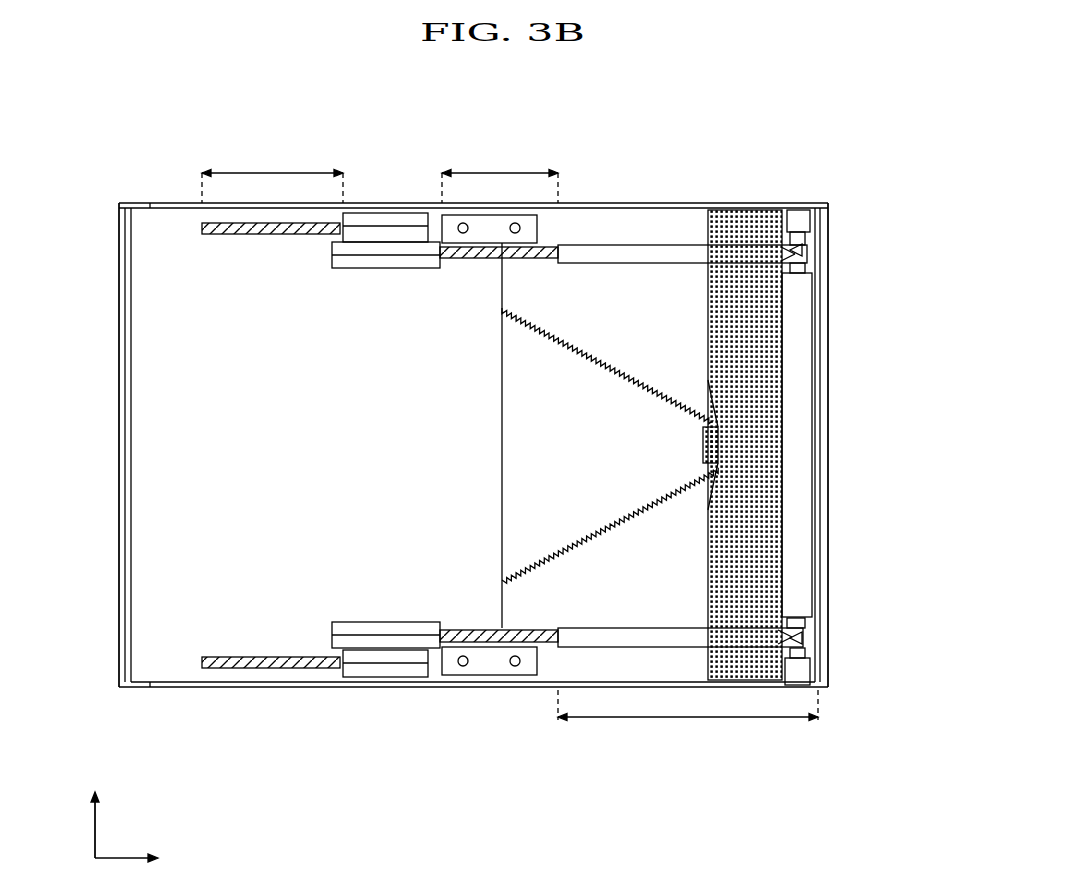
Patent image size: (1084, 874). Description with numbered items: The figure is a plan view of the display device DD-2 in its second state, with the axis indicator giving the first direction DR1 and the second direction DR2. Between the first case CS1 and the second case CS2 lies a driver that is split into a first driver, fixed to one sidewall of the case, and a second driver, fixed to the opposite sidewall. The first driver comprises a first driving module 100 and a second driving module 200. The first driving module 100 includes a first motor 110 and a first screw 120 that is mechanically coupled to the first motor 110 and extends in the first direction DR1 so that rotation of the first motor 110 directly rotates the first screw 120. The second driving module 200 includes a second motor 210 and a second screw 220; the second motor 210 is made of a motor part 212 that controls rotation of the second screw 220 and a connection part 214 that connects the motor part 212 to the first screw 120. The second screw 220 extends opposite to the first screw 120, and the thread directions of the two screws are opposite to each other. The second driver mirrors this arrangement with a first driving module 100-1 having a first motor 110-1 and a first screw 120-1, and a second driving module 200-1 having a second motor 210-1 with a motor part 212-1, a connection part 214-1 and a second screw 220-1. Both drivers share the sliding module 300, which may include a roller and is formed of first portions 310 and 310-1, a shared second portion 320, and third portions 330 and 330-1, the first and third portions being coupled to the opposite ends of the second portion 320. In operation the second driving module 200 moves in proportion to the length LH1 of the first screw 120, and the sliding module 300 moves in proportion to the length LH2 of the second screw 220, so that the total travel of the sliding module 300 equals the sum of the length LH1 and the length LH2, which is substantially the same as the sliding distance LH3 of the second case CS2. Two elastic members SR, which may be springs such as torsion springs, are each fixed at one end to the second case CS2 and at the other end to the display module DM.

The first driving module 100 is at (440, 141).
The first motor 110 is at (445, 228).
The first screw 120 is at (340, 205).
The second driving module 200 is at (495, 361).
The second motor 210 is at (455, 322).
The motor part 212 is at (352, 268).
The connection part 214 is at (400, 268).
The second screw 220 is at (472, 258).
The sliding module 300 is at (902, 238).
The first portion 310 is at (785, 250).
The second portion 320 is at (807, 316).
The third portion 330 is at (795, 270).
The first driving module 100-1 is at (493, 571).
The first motor 110-1 is at (478, 647).
The first screw 120-1 is at (278, 657).
The second driving module 200-1 is at (512, 784).
The second motor 210-1 is at (462, 744).
The motor part 212-1 is at (400, 648).
The connection part 214-1 is at (357, 677).
The second screw 220-1 is at (462, 647).
The first portion 310-1 is at (786, 633).
The third portion 330-1 is at (795, 654).
The display device DD-2 is at (108, 158).
The display module DM is at (770, 388).
The elastic member SR is at (606, 362).
The first case CS1 is at (119, 445).
The second case CS2 is at (829, 446).
The length of the first screw LH1 is at (272, 173).
The length of the second screw LH2 is at (500, 173).
The sliding distance of the second case LH3 is at (688, 718).
The first direction DR1 is at (145, 832).
The second direction DR2 is at (97, 810).